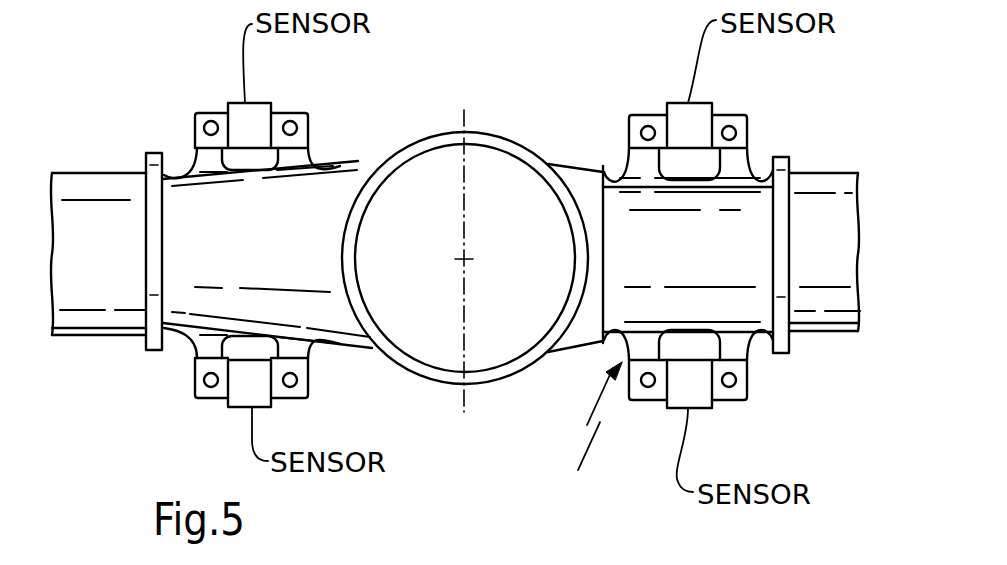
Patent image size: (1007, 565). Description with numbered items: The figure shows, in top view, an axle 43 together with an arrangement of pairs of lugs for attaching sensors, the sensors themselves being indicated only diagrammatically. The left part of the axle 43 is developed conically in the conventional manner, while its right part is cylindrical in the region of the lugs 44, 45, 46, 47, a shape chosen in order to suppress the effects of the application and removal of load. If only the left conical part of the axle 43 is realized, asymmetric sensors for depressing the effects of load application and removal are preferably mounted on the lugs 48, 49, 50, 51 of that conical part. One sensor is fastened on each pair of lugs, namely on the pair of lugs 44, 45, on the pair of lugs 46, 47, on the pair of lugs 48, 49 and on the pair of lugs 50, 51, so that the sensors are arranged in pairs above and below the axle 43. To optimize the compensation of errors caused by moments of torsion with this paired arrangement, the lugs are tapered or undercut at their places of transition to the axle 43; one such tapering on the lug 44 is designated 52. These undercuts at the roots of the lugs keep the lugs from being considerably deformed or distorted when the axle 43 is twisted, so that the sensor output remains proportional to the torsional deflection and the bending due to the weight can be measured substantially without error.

The axle 43 is at (360, 162).
The lug 44 is at (648, 118).
The lug 45 is at (729, 115).
The lug 46 is at (653, 403).
The lug 47 is at (733, 403).
The lug 48 is at (205, 112).
The lug 49 is at (287, 112).
The lug 50 is at (196, 378).
The lug 51 is at (304, 398).
The tapering 52 is at (632, 182).